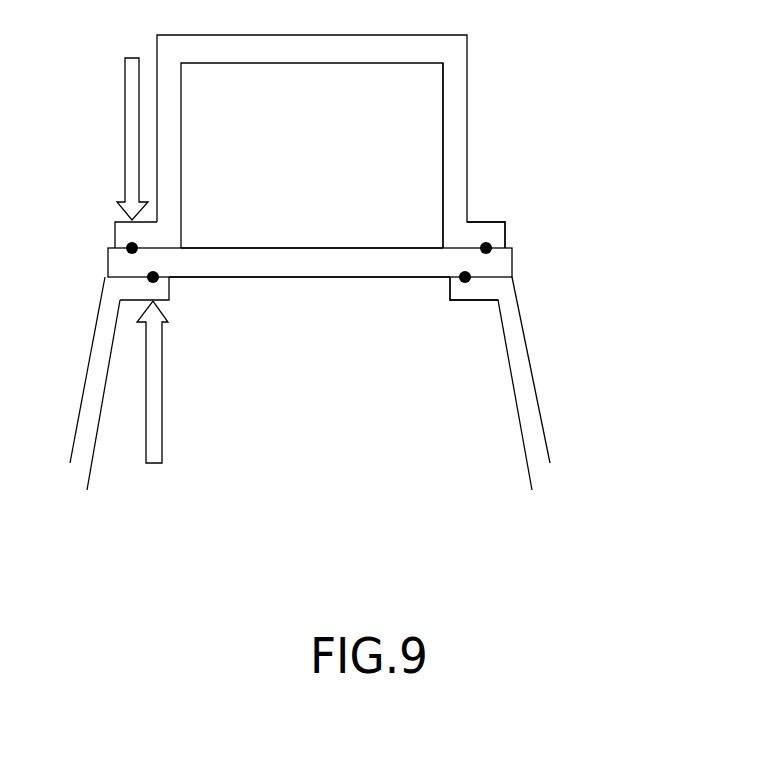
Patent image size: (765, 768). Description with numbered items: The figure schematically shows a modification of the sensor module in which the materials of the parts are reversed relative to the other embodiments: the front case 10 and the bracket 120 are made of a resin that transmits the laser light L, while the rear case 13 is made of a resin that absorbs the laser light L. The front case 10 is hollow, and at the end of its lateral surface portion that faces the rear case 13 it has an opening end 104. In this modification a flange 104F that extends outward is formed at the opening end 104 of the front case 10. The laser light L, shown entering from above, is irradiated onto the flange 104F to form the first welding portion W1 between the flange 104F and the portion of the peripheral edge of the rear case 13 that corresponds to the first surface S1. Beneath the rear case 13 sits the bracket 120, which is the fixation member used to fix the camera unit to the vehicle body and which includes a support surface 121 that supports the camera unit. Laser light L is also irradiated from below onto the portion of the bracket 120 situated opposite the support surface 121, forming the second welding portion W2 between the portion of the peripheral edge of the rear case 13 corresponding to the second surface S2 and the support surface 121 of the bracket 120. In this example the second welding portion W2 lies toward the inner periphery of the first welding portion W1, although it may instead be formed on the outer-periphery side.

The front case 10 is at (466, 82).
The rear case 13 is at (512, 257).
The opening end 104 is at (447, 252).
The flange 104F is at (488, 232).
The support surface 121 is at (452, 280).
The bracket 120 is at (536, 392).
The first welding portion W1 is at (126, 246).
The second welding portion W2 is at (156, 279).
The first surface S1 is at (284, 247).
The second surface S2 is at (295, 278).
The laser light L is at (142, 262).